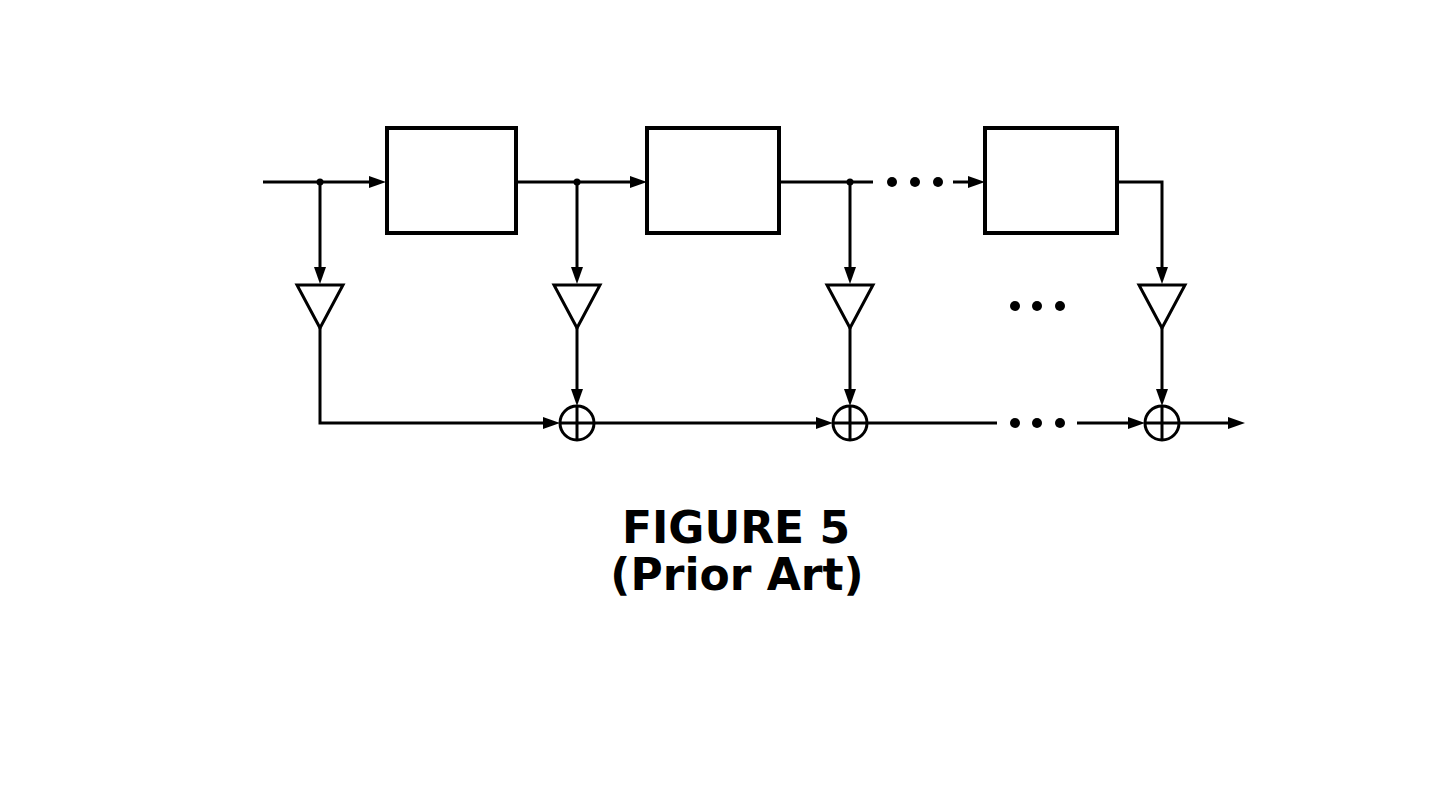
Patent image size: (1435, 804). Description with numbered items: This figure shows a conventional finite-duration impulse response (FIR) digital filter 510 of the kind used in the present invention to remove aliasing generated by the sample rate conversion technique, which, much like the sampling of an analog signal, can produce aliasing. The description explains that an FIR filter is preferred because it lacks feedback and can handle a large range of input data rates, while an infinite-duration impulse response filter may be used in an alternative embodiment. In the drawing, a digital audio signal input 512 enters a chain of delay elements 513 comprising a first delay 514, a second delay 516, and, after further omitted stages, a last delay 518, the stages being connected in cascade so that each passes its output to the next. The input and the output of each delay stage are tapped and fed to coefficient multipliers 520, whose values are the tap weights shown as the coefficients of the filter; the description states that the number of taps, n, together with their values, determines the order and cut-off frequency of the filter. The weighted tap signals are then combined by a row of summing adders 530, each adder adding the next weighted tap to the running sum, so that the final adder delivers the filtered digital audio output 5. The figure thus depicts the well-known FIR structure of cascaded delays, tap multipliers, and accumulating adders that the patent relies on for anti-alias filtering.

The filtered digital audio output 5 is at (1215, 421).
The prior art FIR digital filter 510 is at (1310, 153).
The digital audio signal input 512 is at (293, 183).
The delay line (cascaded delay elements) 513 is at (1035, 129).
The first delay element 514 is at (466, 233).
The second delay element 516 is at (727, 233).
The last delay element 518 is at (1073, 233).
The coefficient multipliers 520 is at (308, 310).
The summing adders 530 is at (564, 436).